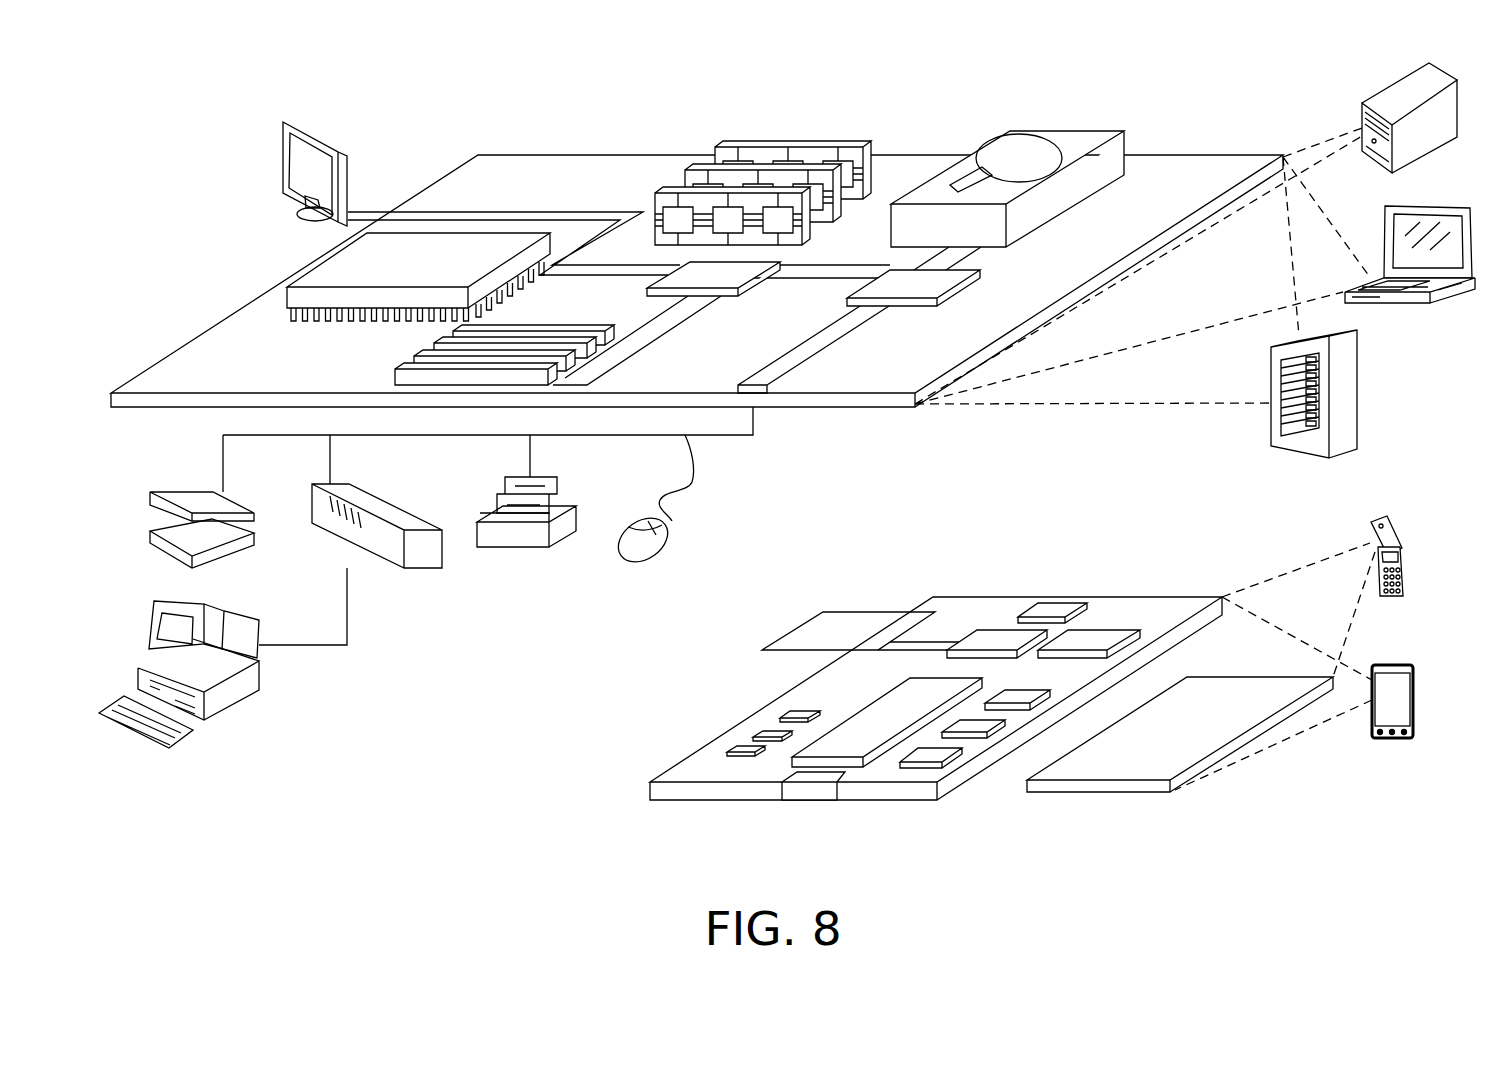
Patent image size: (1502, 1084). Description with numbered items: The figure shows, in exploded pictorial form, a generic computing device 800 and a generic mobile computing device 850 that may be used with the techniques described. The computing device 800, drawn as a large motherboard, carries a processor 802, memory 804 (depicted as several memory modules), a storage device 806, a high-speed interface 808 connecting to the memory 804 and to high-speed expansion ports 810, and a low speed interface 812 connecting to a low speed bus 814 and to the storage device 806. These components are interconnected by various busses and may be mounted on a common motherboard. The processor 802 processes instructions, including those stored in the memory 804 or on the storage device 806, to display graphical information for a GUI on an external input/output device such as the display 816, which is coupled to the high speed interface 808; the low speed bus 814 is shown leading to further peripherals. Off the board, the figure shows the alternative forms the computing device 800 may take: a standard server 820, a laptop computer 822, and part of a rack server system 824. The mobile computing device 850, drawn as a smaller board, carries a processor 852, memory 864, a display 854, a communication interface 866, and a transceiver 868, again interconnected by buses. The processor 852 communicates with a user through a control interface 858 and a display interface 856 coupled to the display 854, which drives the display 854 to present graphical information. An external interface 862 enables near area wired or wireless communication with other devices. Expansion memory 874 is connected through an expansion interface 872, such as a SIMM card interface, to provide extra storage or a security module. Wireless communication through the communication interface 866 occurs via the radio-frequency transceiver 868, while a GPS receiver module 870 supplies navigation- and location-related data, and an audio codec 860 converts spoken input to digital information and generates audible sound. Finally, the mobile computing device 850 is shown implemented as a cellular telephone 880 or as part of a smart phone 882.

The computing device 800 is at (434, 103).
The processor 802 is at (314, 266).
The memory 804 is at (800, 146).
The storage device 806 is at (1052, 131).
The high-speed interface 808 is at (727, 273).
The high-speed expansion ports 810 is at (420, 354).
The low speed interface 812 is at (884, 280).
The low speed bus 814 is at (760, 378).
The display 816 is at (288, 120).
The standard server 820 is at (1385, 96).
The laptop computer 822 is at (1444, 205).
The rack server system 824 is at (1358, 397).
The mobile computer device 850 is at (606, 804).
The processor 852 is at (853, 733).
The display 854 is at (1221, 692).
The display interface 856 is at (948, 758).
The control interface 858 is at (985, 727).
The audio codec 860 is at (1022, 690).
The external interface 862 is at (811, 786).
The memory 864 is at (758, 735).
The communication interface 866 is at (998, 632).
The transceiver 868 is at (1095, 633).
The GPS receiver module 870 is at (1053, 606).
The expansion interface 872 is at (916, 611).
The expansion memory 874 is at (824, 610).
The cellular telephone 880 is at (1380, 516).
The smart phone 882 is at (1384, 665).